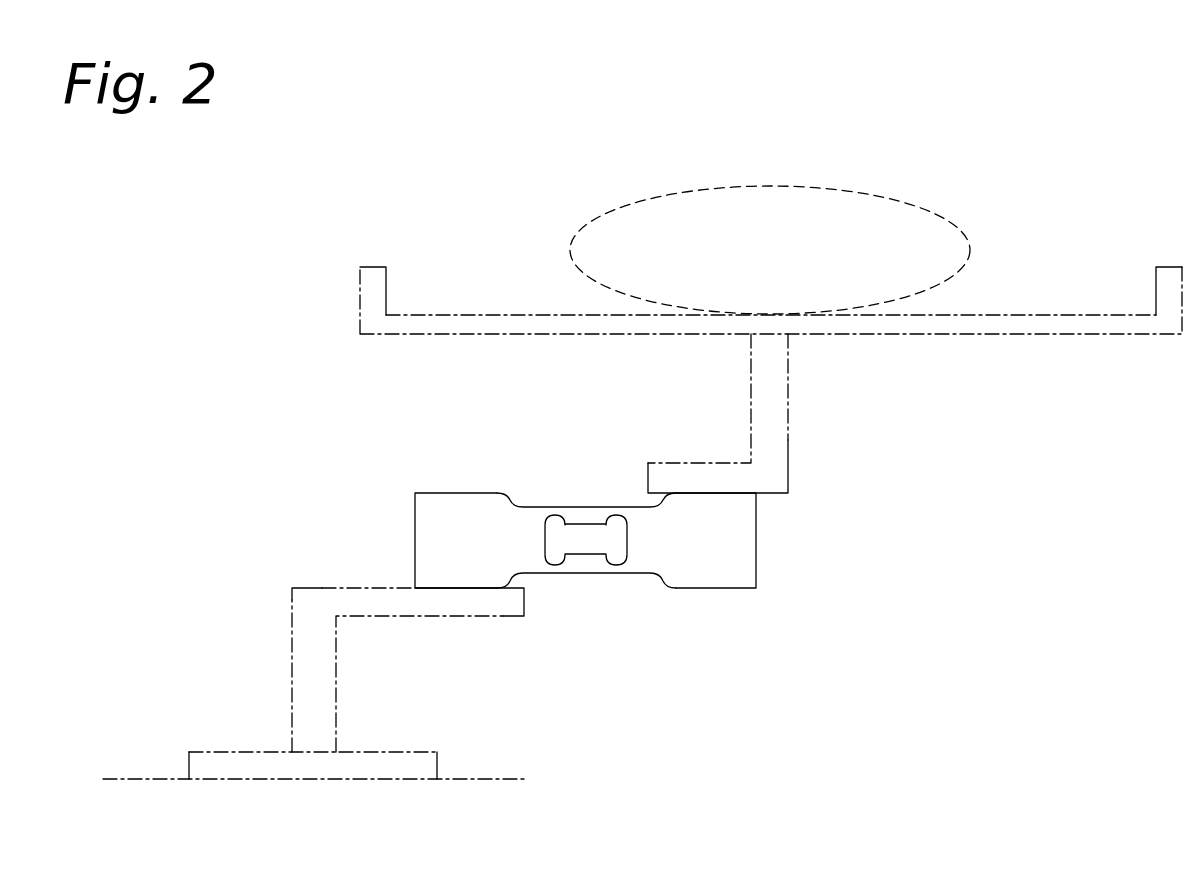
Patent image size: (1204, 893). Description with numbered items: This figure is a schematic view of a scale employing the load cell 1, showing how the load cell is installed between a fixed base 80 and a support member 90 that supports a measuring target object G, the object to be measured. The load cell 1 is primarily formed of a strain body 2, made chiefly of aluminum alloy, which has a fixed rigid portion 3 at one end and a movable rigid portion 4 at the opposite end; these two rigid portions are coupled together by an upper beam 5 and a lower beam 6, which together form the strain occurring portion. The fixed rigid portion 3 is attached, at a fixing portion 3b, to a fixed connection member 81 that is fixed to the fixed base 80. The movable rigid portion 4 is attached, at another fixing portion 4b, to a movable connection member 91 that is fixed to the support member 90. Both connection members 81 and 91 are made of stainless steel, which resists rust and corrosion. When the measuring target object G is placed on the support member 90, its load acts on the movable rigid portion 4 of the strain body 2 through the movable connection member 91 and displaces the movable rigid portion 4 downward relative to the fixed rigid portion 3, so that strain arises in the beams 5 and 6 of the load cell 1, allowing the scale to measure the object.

The load cell 1 is at (616, 518).
The strain body 2 is at (616, 518).
The fixed rigid portion 3 is at (427, 537).
The fixing portion 3b is at (450, 590).
The movable rigid portion 4 is at (732, 574).
The fixing portion 4b is at (717, 493).
The upper beam 5 is at (568, 507).
The lower beam 6 is at (580, 570).
The fixed base 80 is at (163, 766).
The fixed connection member 81 is at (280, 633).
The support member 90 is at (1023, 312).
The movable connection member 91 is at (792, 440).
The measuring target object G is at (862, 190).